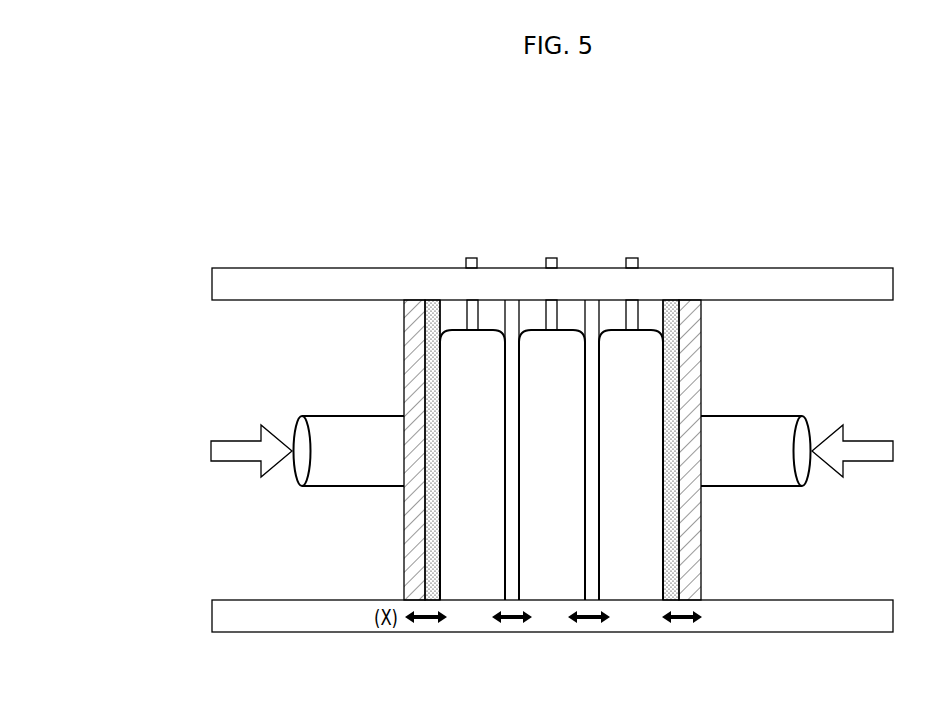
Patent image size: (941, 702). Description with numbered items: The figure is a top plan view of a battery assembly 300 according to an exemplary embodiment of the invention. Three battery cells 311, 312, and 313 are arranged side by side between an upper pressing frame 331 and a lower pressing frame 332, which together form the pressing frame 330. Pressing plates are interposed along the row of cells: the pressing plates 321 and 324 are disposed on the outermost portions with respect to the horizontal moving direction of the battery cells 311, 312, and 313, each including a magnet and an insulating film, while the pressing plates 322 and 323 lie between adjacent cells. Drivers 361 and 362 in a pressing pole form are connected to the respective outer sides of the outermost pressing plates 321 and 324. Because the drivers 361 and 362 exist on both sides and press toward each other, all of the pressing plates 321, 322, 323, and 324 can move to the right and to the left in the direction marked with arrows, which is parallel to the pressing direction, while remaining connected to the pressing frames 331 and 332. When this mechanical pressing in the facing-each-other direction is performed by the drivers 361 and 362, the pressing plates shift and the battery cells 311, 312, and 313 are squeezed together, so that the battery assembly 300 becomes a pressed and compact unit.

The battery assembly 300 is at (572, 122).
The pressing frame 330 is at (134, 266).
The pressing frame 331 is at (212, 288).
The pressing frame 332 is at (212, 617).
The battery cell 311 is at (468, 585).
The battery cell 312 is at (548, 585).
The battery cell 313 is at (637, 585).
The pressing plate 321 is at (412, 330).
The pressing plate 322 is at (512, 308).
The pressing plate 323 is at (593, 309).
The pressing plate 324 is at (692, 334).
The driver 361 is at (768, 478).
The driver 362 is at (333, 478).